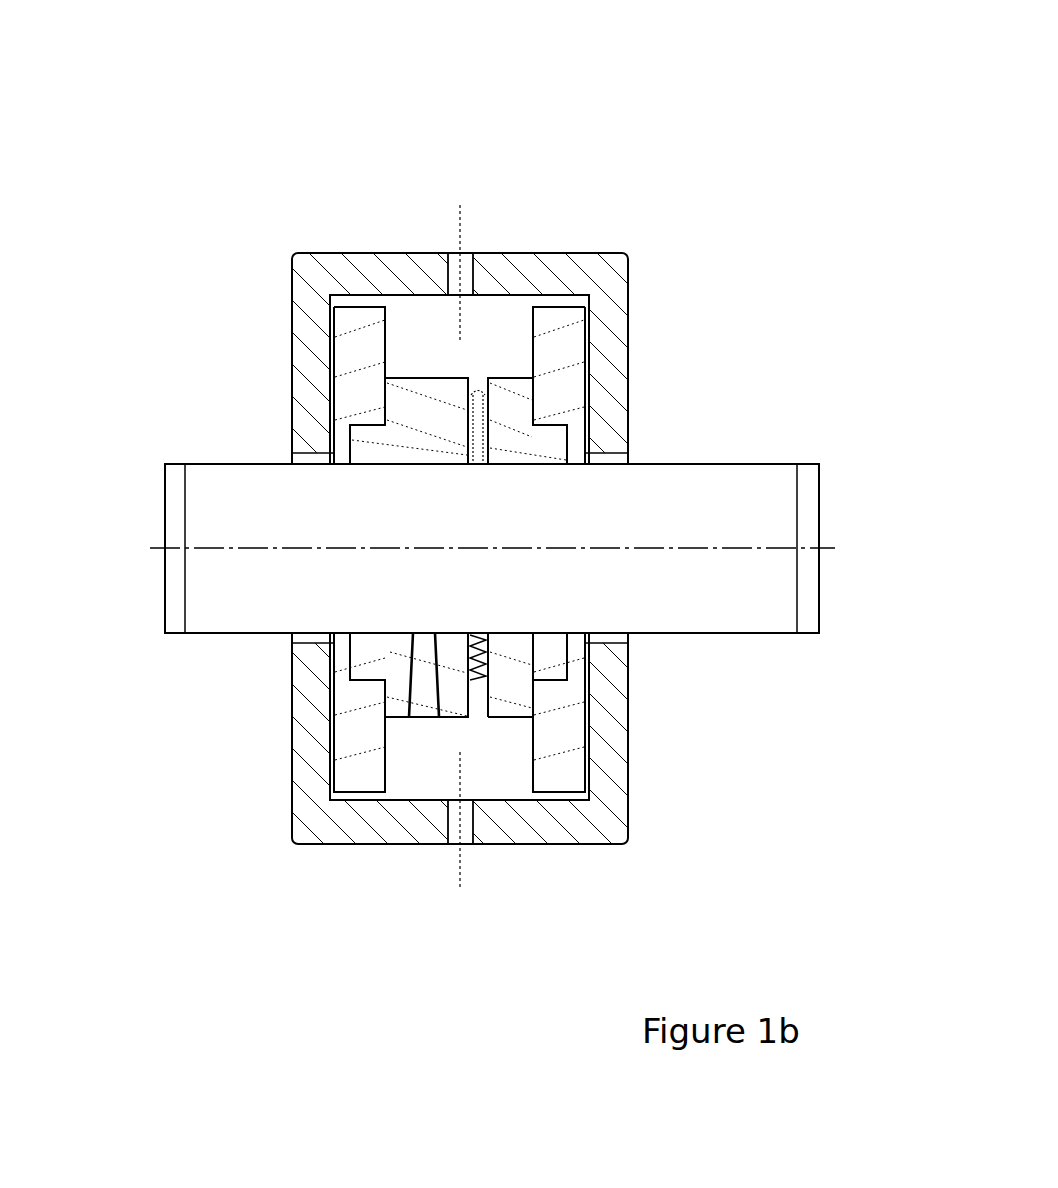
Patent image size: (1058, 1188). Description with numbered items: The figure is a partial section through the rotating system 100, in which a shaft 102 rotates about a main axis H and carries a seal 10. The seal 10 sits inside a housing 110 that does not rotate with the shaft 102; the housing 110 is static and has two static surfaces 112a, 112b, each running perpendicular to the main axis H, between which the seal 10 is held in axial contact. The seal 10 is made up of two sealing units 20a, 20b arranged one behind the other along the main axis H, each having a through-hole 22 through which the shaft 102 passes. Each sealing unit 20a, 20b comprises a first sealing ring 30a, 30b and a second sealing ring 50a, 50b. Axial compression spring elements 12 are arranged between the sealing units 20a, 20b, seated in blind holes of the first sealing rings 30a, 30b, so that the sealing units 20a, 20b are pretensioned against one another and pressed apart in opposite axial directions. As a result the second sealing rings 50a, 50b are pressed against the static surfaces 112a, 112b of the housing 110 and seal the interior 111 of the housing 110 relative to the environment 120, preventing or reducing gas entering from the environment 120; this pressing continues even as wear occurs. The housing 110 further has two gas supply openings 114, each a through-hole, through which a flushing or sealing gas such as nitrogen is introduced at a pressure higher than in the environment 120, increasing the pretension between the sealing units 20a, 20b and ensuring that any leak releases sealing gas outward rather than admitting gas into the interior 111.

The rotating system 100 is at (147, 743).
The environment 120 is at (750, 63).
The shaft 102 is at (747, 482).
The housing 110 is at (612, 272).
The interior of the housing 111 is at (398, 792).
The static surface 112a is at (338, 417).
The static surface 112b is at (578, 393).
The gas supply opening 114 is at (452, 272).
The seal 10 is at (465, 358).
The axial compression spring element 12 is at (487, 643).
The through-hole 22 is at (341, 458).
The second sealing ring 50a is at (362, 318).
The second sealing ring 50b is at (547, 318).
The first sealing ring 30a is at (402, 670).
The first sealing ring 30b is at (513, 687).
The sealing unit 20a is at (398, 727).
The sealing unit 20b is at (518, 727).
The main axis H is at (248, 548).